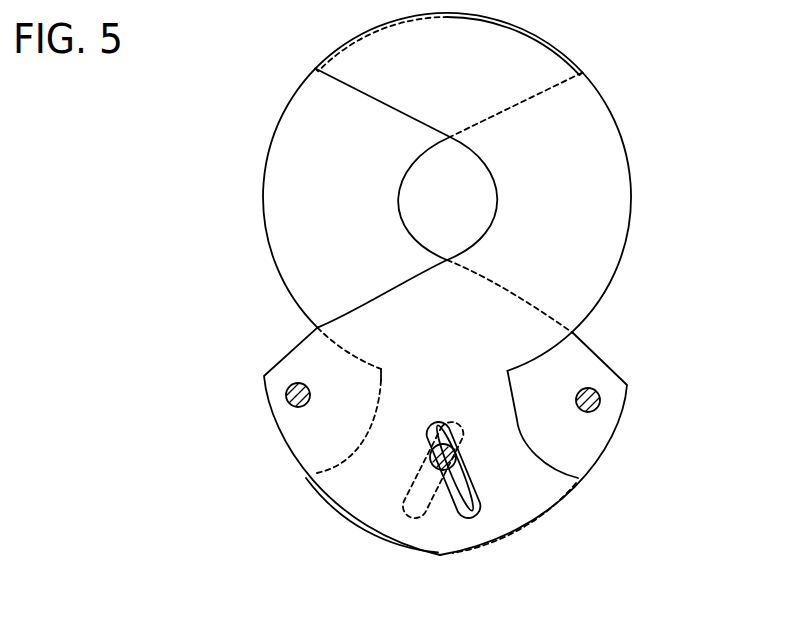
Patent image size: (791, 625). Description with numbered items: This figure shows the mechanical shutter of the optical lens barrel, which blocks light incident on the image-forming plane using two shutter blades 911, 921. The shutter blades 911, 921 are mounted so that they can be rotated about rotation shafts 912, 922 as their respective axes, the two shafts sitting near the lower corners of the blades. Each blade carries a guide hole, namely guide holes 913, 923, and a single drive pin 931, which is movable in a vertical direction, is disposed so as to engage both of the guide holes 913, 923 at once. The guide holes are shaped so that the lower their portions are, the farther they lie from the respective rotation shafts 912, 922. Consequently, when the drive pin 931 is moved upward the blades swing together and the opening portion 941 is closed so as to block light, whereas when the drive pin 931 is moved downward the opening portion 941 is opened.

The shutter blade 911 is at (602, 148).
The rotation shaft 912 is at (293, 407).
The guide hole 913 is at (480, 512).
The shutter blade 921 is at (300, 118).
The rotation shaft 922 is at (597, 410).
The guide hole 923 is at (411, 516).
The drive pin 931 is at (450, 513).
The opening portion 941 is at (462, 193).